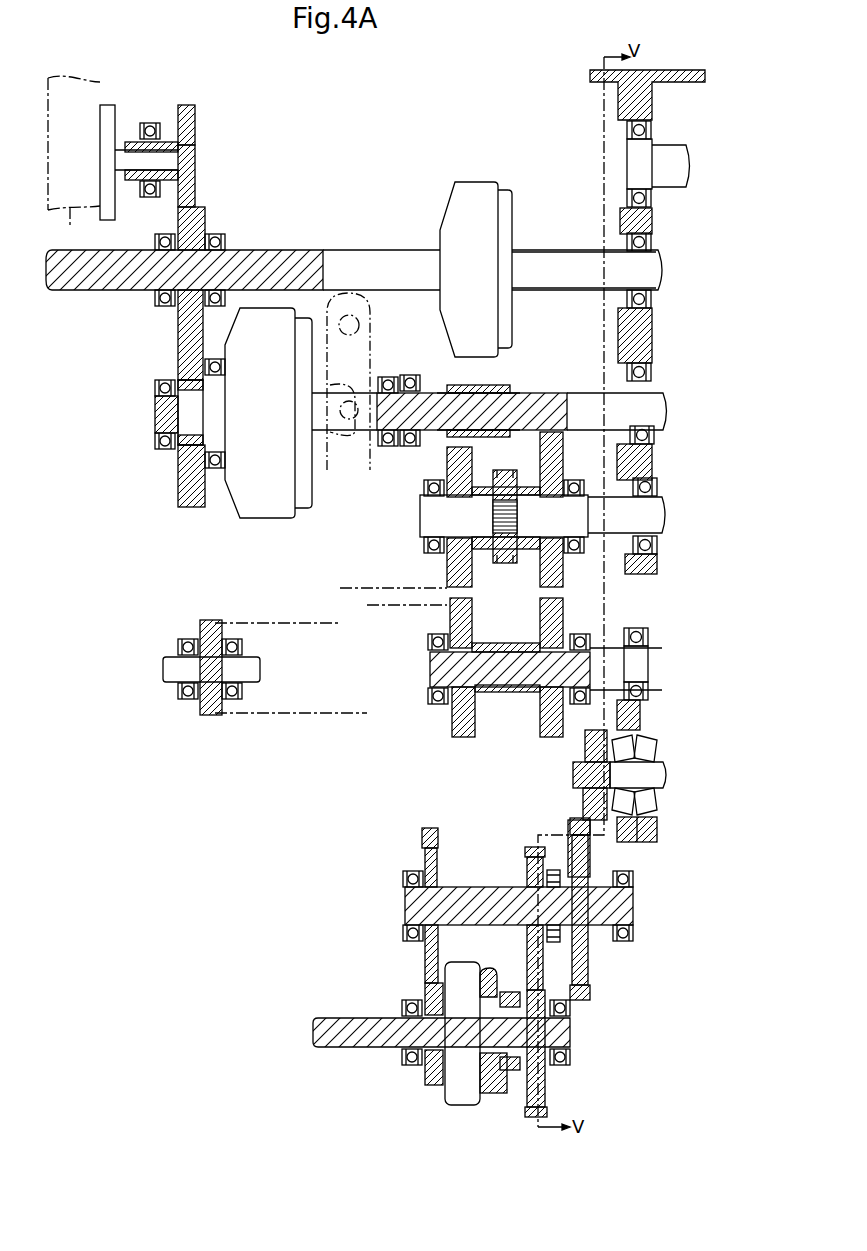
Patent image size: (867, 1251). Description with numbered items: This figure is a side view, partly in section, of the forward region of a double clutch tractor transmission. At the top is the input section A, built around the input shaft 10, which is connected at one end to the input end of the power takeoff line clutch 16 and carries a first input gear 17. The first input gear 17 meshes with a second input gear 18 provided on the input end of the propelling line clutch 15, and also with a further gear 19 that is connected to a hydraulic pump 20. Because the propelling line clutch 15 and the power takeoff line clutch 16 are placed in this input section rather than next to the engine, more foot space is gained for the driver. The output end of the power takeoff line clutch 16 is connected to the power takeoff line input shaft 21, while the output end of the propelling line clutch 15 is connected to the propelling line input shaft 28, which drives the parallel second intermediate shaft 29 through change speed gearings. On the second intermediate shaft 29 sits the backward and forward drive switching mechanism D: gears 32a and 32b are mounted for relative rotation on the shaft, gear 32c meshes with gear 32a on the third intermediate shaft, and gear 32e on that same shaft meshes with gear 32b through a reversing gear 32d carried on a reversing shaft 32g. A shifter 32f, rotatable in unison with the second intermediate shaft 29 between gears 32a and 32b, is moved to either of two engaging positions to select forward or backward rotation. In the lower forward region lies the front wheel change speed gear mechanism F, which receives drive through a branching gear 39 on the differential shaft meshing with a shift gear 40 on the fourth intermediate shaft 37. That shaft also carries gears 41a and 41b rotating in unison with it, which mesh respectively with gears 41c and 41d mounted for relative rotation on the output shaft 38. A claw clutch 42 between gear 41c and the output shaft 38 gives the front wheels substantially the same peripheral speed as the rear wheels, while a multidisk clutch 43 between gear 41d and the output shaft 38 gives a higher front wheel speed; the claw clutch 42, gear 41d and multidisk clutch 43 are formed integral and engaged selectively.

The input shaft 10 is at (105, 290).
The propelling line clutch 15 is at (270, 516).
The power takeoff line clutch 16 is at (477, 183).
The first input gear 17 is at (197, 225).
The second input gear 18 is at (197, 508).
The further gear 19 is at (197, 120).
The hydraulic pump 20 is at (113, 164).
The power takeoff line input shaft 21 is at (586, 290).
The propelling line input shaft 28 is at (540, 392).
The second intermediate shaft 29 is at (428, 519).
The gear 32a is at (570, 446).
The gear 32b is at (447, 462).
The gear 32c is at (563, 610).
The reversing gear 32d is at (212, 715).
The gear 32e is at (452, 725).
The shifter 32f is at (512, 565).
The reversing shaft 32g is at (260, 670).
The fourth intermediate shaft 37 is at (476, 887).
The output shaft 38 is at (340, 1035).
The branching gear 39 is at (590, 768).
The shift gear 40 is at (590, 970).
The gear 41a is at (535, 847).
The gear 41b is at (428, 828).
The gear 41c is at (548, 1110).
The gear 41d is at (428, 1083).
The claw clutch 42 is at (510, 1087).
The multidisk clutch 43 is at (447, 965).
The input section A is at (159, 318).
The backward and forward drive switching mechanism D is at (508, 592).
The front wheel change speed gear mechanism F is at (473, 973).